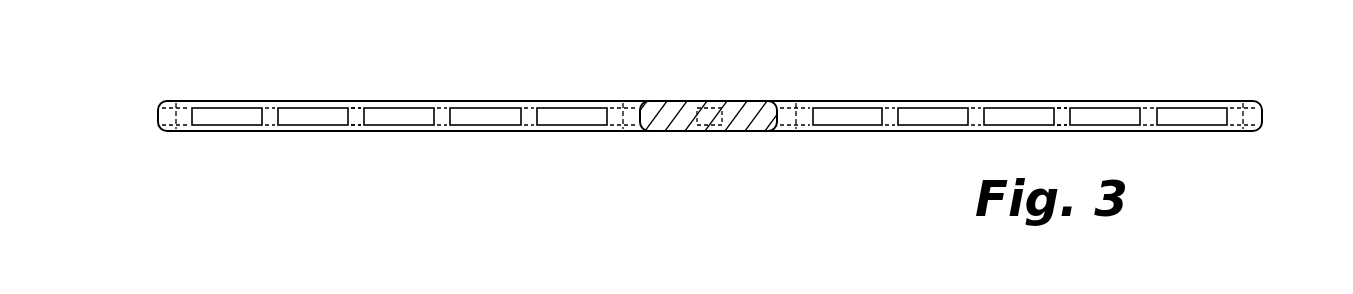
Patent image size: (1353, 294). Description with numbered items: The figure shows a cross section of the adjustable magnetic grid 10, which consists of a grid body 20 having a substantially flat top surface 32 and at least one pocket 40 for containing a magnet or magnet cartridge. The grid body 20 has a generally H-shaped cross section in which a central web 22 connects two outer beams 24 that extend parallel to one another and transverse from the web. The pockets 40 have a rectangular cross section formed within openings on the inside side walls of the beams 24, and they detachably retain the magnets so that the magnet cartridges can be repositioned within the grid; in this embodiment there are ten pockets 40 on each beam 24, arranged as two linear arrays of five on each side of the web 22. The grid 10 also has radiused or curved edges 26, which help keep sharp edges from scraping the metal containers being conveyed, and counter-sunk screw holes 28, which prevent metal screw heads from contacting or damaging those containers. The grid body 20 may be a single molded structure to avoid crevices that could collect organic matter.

The adjustable magnetic grid 10 is at (720, 95).
The grid body 20 is at (1268, 110).
The central web 22 is at (753, 110).
The outer beam 24 is at (357, 110).
The curved edges 26 is at (165, 116).
The counter-sunk screw holes 28 is at (715, 99).
The top surface 32 is at (1063, 99).
The pocket 40 is at (483, 116).